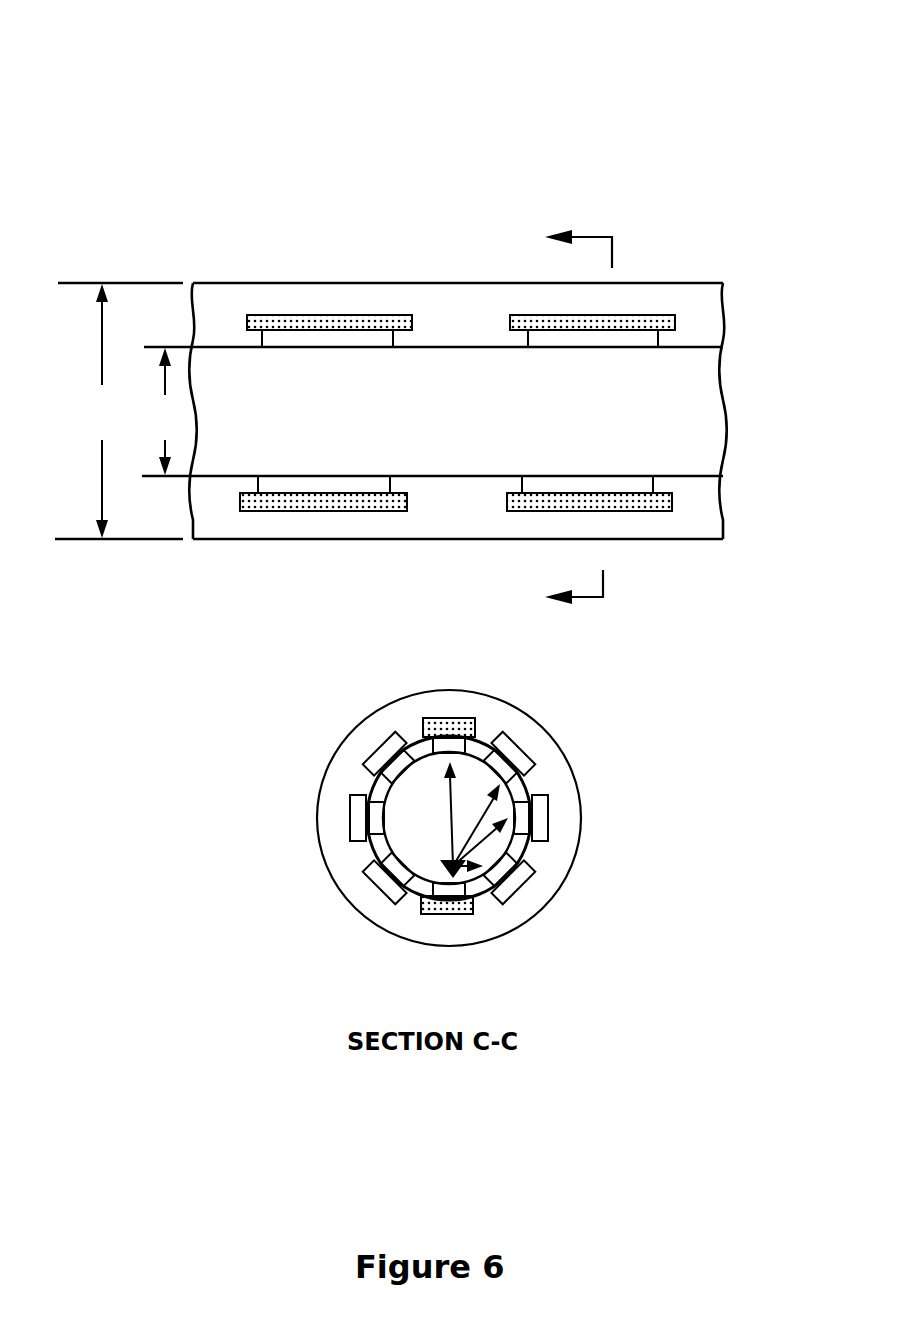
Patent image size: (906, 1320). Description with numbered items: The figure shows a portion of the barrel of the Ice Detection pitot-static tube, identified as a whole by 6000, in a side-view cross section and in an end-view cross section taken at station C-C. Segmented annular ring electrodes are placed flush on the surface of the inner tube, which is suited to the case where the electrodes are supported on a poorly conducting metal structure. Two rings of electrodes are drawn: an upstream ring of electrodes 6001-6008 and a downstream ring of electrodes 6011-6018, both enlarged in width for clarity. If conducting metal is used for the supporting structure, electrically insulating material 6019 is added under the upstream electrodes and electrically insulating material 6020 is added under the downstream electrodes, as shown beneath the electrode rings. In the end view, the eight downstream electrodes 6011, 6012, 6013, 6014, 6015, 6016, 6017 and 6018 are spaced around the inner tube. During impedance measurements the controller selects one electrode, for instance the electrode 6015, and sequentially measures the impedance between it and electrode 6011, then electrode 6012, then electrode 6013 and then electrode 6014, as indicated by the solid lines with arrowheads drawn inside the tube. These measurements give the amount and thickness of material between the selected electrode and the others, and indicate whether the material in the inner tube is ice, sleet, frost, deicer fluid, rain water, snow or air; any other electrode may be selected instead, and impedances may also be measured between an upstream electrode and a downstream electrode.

The segmented annular ring electrode arrangement 6000 is at (260, 95).
The upstream ring of electrodes 6001-6008 is at (333, 347).
The downstream ring of electrodes 6011-6018 is at (650, 317).
The electrode 6011 is at (453, 745).
The electrode 6012 is at (510, 770).
The electrode 6013 is at (515, 828).
The electrode 6014 is at (495, 873).
The selected electrode 6015 is at (447, 887).
The electrode 6016 is at (398, 870).
The electrode 6017 is at (373, 814).
The electrode 6018 is at (372, 755).
The electrically insulating material 6019 is at (388, 315).
The electrically insulating material 6020 is at (668, 317).